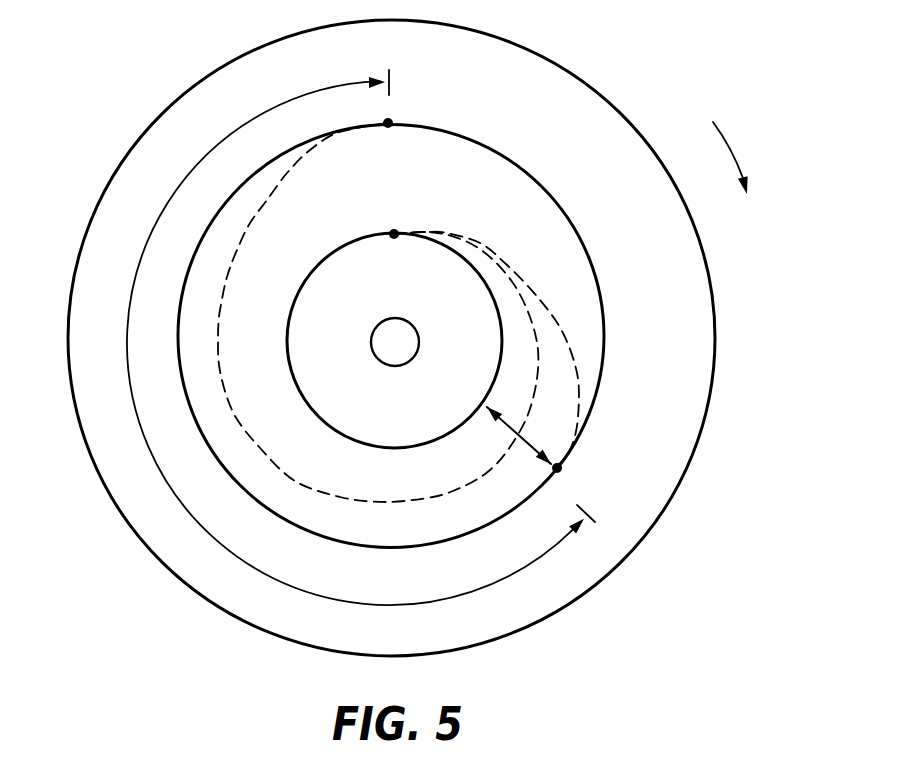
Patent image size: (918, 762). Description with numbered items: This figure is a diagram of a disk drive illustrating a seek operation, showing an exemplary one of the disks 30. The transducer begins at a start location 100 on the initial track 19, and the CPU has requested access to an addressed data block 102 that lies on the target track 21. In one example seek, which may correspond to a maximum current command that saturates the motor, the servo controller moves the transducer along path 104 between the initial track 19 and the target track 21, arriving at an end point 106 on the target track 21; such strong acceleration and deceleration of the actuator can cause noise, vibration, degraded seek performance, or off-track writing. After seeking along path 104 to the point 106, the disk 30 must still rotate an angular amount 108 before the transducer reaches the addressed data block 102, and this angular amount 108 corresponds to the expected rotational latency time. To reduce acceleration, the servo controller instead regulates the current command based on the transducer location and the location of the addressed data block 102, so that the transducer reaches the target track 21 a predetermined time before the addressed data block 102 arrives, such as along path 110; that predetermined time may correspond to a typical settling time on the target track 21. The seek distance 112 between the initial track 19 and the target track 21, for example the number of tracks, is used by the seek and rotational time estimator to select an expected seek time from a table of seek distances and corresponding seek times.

The disk 30 is at (515, 43).
The target track 21 is at (488, 147).
The initial track 19 is at (308, 278).
The start location 100 is at (394, 238).
The addressed data block 102 is at (390, 128).
The path 104 is at (497, 253).
The end point 106 is at (561, 468).
The angular amount 108 is at (145, 437).
The path 110 is at (257, 210).
The seek distance 112 is at (507, 425).